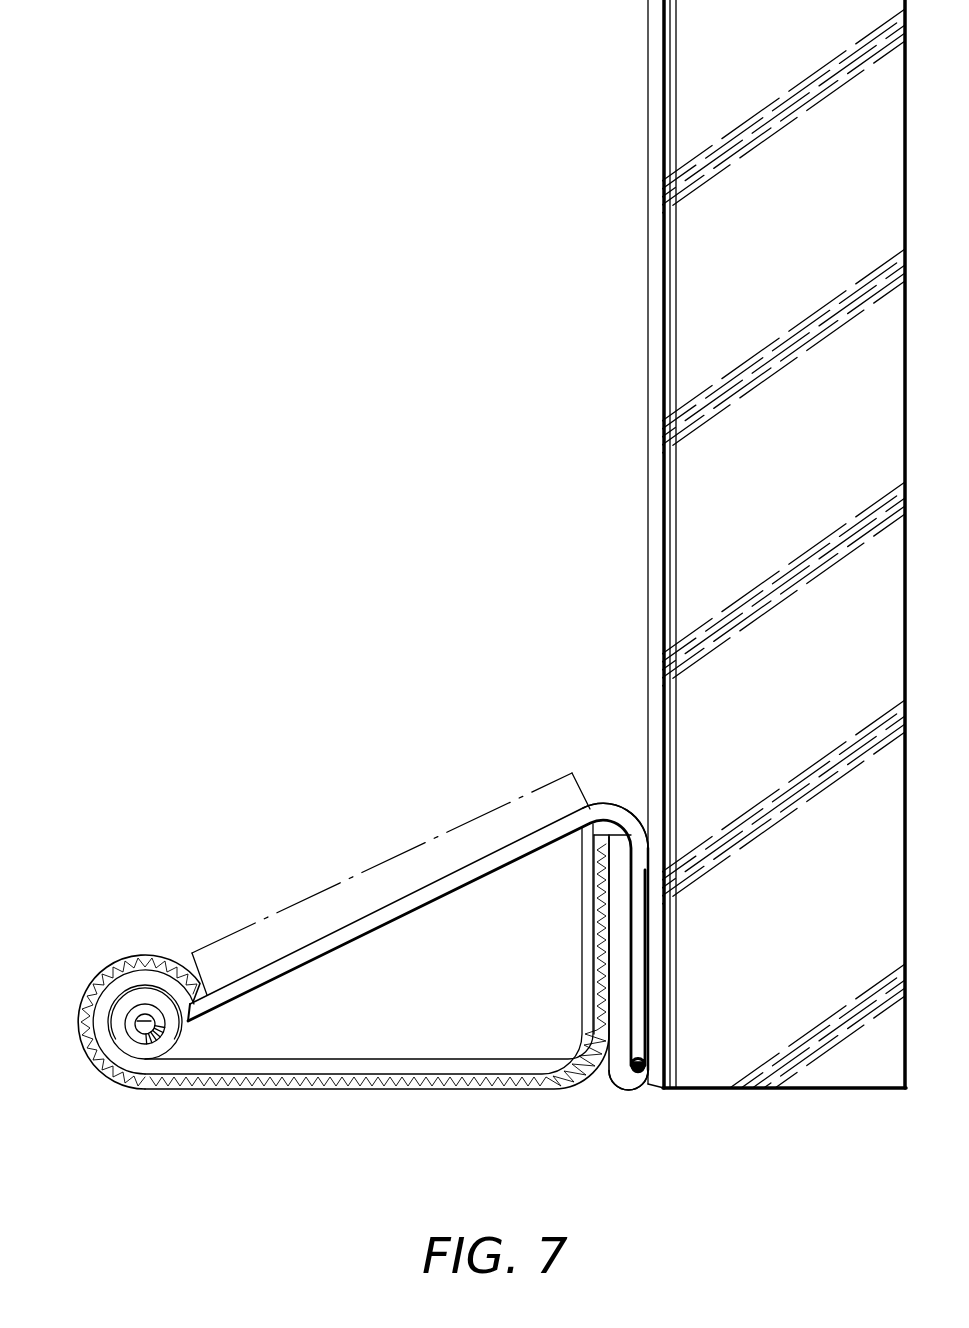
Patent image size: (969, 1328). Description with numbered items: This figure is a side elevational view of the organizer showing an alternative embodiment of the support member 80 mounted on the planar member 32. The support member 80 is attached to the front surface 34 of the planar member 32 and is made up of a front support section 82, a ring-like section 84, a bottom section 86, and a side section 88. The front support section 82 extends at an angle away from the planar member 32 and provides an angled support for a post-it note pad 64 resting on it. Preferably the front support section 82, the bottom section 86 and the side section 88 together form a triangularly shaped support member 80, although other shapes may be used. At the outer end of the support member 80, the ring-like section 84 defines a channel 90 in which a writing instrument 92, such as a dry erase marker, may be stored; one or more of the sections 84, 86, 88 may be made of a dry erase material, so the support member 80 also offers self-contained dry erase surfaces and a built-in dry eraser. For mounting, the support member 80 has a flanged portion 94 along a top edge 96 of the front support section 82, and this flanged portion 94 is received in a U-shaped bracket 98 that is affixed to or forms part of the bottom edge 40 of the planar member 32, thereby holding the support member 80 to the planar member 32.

The support member 80 is at (590, 93).
The planar member 32 is at (630, 208).
The front surface 34 is at (648, 472).
The bottom edge 40 is at (657, 1088).
The post-it note pad 64 is at (308, 898).
The front support section 82 is at (445, 880).
The ring-like section 84 is at (84, 1046).
The bottom section 86 is at (361, 1062).
The side section 88 is at (578, 962).
The channel 90 is at (142, 1016).
The writing instrument 92 is at (148, 1040).
The flanged portion 94 is at (652, 922).
The top edge 96 is at (616, 802).
The U-shaped bracket 98 is at (612, 1082).